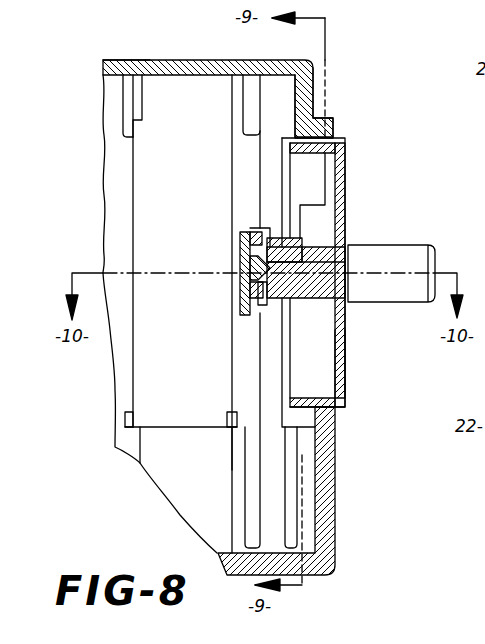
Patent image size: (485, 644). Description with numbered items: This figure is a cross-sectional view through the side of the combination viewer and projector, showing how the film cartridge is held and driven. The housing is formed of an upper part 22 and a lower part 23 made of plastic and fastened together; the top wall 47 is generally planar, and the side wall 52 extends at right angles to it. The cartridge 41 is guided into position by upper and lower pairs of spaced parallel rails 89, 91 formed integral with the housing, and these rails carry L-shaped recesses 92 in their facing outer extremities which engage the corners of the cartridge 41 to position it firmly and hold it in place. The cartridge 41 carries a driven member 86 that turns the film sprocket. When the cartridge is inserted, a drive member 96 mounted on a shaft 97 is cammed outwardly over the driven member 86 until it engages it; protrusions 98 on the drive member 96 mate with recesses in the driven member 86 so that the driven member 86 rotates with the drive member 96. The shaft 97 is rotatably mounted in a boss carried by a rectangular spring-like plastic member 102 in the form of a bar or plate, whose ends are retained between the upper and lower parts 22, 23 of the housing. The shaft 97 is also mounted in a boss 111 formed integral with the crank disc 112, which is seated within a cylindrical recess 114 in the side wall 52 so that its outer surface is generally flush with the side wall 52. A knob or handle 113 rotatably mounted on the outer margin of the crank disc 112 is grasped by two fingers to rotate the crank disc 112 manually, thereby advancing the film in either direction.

The upper part of housing 22 is at (119, 60).
The top wall 47 is at (202, 66).
The side wall 52 is at (307, 102).
The upper rails 89 is at (127, 95).
The L-shaped recesses 92 is at (130, 140).
The cartridge 41 is at (128, 184).
The drive member 96 is at (252, 232).
The protrusions 98 is at (250, 238).
The shaft 97 is at (252, 278).
The driven member 86 is at (252, 314).
The spring-like member 102 is at (271, 240).
The cylindrical recess 114 is at (325, 152).
The knob or handle 113 is at (423, 228).
The boss 111 is at (338, 316).
The crank disc 112 is at (343, 377).
The lower part of housing 23 is at (335, 490).
The lower rails 91 is at (128, 447).